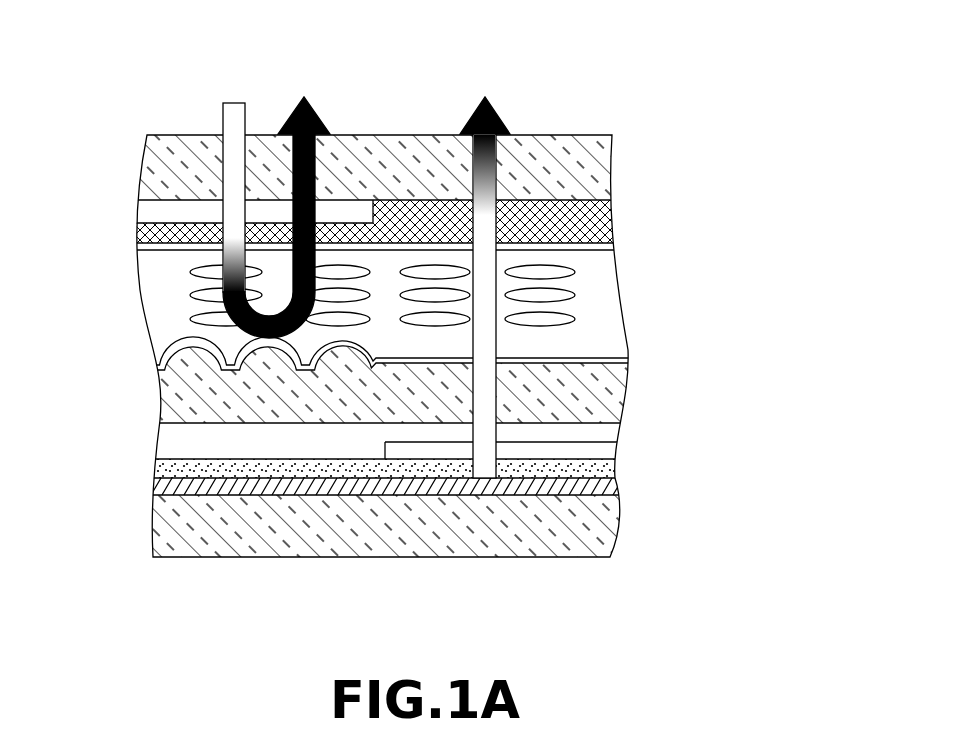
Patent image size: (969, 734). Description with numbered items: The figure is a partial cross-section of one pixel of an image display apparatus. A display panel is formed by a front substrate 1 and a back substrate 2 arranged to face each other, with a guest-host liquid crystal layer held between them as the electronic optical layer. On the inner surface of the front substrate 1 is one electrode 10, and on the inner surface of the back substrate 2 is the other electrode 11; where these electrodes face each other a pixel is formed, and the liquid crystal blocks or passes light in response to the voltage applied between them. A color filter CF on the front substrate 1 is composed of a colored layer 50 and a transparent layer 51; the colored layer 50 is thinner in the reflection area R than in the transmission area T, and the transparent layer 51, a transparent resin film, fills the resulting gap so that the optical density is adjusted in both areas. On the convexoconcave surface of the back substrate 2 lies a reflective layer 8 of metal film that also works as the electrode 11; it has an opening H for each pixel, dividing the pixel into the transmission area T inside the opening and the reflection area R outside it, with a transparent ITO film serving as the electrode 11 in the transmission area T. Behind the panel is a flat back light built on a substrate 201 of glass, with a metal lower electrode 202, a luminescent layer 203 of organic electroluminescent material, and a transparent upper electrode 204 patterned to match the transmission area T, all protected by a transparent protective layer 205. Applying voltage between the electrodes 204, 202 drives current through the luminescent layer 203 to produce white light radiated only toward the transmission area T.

The front substrate 1 is at (585, 173).
The back substrate 2 is at (608, 410).
The reflective layer 8 is at (196, 382).
The one electrode 10 is at (600, 243).
The other electrode 11 is at (620, 361).
The colored layer 50 is at (143, 236).
The transparent layer 51 is at (147, 213).
The substrate 201 is at (503, 533).
The lower electrode 202 is at (299, 483).
The luminescent layer 203 is at (592, 468).
The upper electrode 204 is at (600, 450).
The transparent protective layer 205 is at (220, 442).
The opening H is at (537, 384).
The color filter CF is at (392, 185).
The reflection area R is at (375, 45).
The transmission area T is at (626, 45).